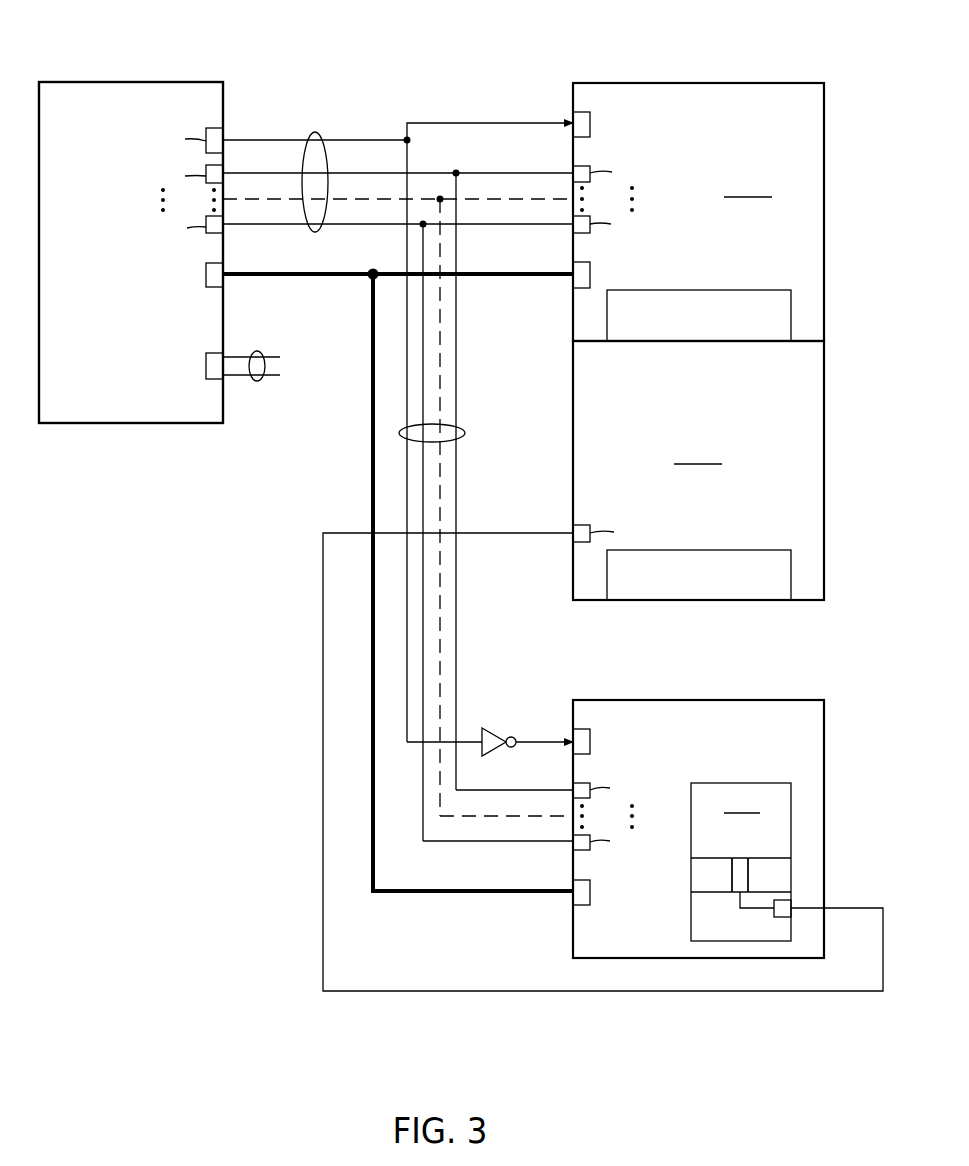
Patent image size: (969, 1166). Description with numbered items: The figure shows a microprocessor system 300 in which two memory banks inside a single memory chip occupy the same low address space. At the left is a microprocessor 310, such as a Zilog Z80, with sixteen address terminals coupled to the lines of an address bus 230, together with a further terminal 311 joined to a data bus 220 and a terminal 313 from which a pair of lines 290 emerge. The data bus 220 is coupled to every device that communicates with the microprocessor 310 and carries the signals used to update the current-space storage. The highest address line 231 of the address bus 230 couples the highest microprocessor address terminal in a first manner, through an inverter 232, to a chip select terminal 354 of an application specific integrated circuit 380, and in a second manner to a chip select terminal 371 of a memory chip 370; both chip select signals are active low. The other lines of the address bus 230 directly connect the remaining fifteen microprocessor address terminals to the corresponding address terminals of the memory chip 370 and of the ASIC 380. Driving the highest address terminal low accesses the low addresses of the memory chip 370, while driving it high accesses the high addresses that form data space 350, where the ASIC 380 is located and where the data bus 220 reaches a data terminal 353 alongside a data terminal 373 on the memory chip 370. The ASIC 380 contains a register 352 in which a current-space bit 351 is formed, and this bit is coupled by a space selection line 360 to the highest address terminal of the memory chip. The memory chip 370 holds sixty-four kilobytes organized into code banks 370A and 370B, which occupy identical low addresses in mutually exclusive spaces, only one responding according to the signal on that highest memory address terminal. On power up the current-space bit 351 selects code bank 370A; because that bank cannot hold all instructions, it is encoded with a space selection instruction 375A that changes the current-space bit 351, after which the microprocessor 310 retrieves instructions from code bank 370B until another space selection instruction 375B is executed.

The microprocessor system 300 is at (423, 34).
The microprocessor 310 is at (102, 89).
The microprocessor data pin 311 is at (206, 272).
The microprocessor control pin 313 is at (206, 360).
The data bus 220 is at (263, 278).
The address bus 230 is at (320, 133).
The highest address line 231 is at (248, 140).
The inverter 232 is at (490, 731).
The control lines 290 is at (257, 382).
The data space 350 is at (747, 701).
The current-space bit 351 is at (739, 862).
The register 352 is at (693, 872).
The data pin 353 is at (590, 890).
The chip select terminal 354 is at (590, 738).
The space selection line 360 is at (323, 916).
The memory chip 370 is at (739, 340).
The code bank 370A is at (698, 212).
The code bank 370B is at (698, 470).
The chip select terminal 371 is at (590, 124).
The memory bank data pin 373 is at (590, 272).
The space selection instruction A 375A is at (743, 290).
The space selection instruction B 375B is at (743, 550).
The application specific integrated circuit 380 is at (741, 862).